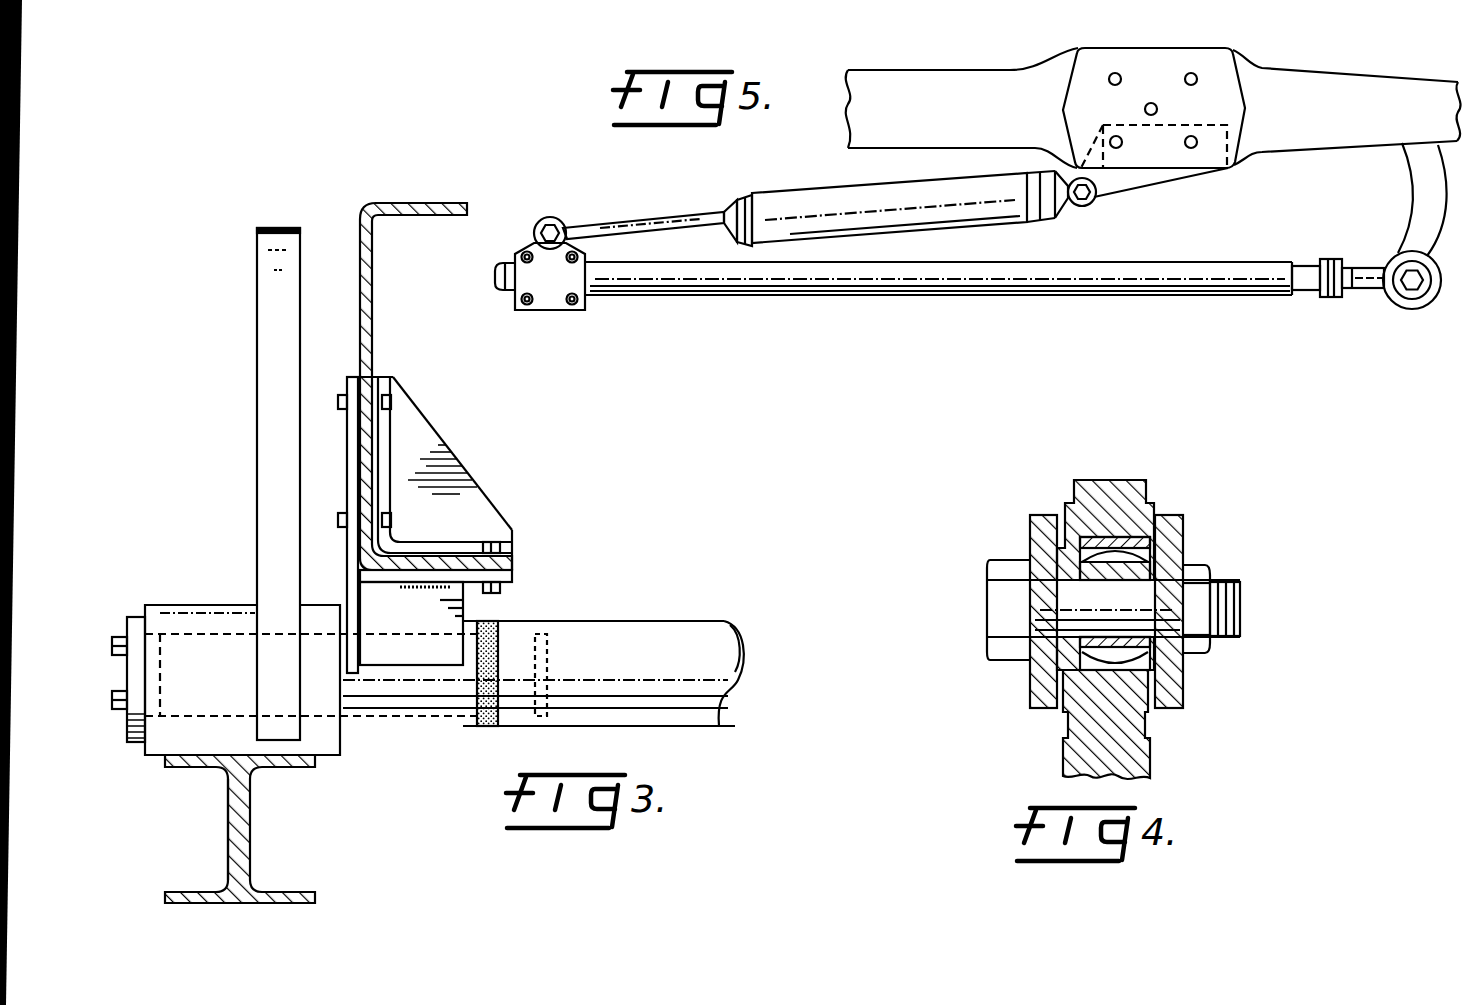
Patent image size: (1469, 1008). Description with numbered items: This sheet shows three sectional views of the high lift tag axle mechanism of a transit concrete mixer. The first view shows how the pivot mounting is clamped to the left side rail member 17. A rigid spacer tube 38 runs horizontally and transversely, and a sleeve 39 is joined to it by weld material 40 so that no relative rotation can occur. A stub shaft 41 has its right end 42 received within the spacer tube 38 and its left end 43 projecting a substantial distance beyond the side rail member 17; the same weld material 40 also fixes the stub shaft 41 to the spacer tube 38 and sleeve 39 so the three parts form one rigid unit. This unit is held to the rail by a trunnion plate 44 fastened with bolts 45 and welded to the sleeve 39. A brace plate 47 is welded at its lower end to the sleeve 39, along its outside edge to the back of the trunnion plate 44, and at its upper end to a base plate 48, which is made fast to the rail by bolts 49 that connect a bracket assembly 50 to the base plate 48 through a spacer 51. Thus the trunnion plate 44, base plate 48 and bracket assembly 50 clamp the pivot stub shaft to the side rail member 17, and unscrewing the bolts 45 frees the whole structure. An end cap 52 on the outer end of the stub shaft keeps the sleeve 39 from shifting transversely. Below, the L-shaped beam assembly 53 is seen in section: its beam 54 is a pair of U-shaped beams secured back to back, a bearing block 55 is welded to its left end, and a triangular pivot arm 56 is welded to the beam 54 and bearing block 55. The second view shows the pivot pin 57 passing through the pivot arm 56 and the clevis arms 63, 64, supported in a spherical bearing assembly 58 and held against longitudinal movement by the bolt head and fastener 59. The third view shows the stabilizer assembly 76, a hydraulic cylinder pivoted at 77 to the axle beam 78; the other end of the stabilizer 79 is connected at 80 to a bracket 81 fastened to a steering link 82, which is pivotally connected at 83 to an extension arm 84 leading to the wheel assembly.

In FIG. 3, the left side rail member 17 is at (436, 386).
In FIG. 3, the spacer tube 38 is at (605, 694).
In FIG. 3, the sleeve 39 is at (535, 723).
In FIG. 3, the weld material 40 is at (497, 694).
In FIG. 3, the stub shaft 41 is at (549, 612).
In FIG. 3, the right end of the stub shaft 42 is at (570, 675).
In FIG. 3, the left end of the stub shaft 43 is at (311, 680).
In FIG. 3, the trunnion plate 44 is at (330, 525).
In FIG. 3, the bolts 45 is at (348, 437).
In FIG. 3, the brace plate 47 is at (383, 631).
In FIG. 3, the base plate 48 is at (463, 582).
In FIG. 3, the bolts 49 is at (522, 542).
In FIG. 3, the bracket assembly 50 is at (433, 466).
In FIG. 3, the spacer 51 is at (543, 550).
In FIG. 3, the end cap 52 is at (124, 653).
In FIG. 3, the beam assembly 53 is at (263, 829).
In FIG. 3, the beam 54 is at (195, 829).
In FIG. 3, the bearing block 55 is at (242, 782).
In FIG. 3, the pivot arm 56 is at (247, 484).
In FIG. 4, the pivot arm 56 is at (1137, 724).
In FIG. 4, the pivot pin 57 is at (1080, 610).
In FIG. 4, the spherical bearing assembly 58 is at (1135, 564).
In FIG. 4, the fastener 59 is at (1223, 626).
In FIG. 4, the clevis arm 63 is at (1207, 600).
In FIG. 4, the clevis arm 64 is at (1019, 591).
In FIG. 5, the stabilizer assembly 76 is at (643, 200).
In FIG. 5, the pivot 77 is at (1099, 211).
In FIG. 5, the axle beam 78 is at (1153, 122).
In FIG. 5, the stabilizer 79 is at (896, 195).
In FIG. 5, the connection 80 is at (541, 209).
In FIG. 5, the bracket 81 is at (540, 300).
In FIG. 5, the steering link 82 is at (984, 304).
In FIG. 5, the pivotal connection 83 is at (1412, 302).
In FIG. 5, the extension arm 84 is at (1399, 199).